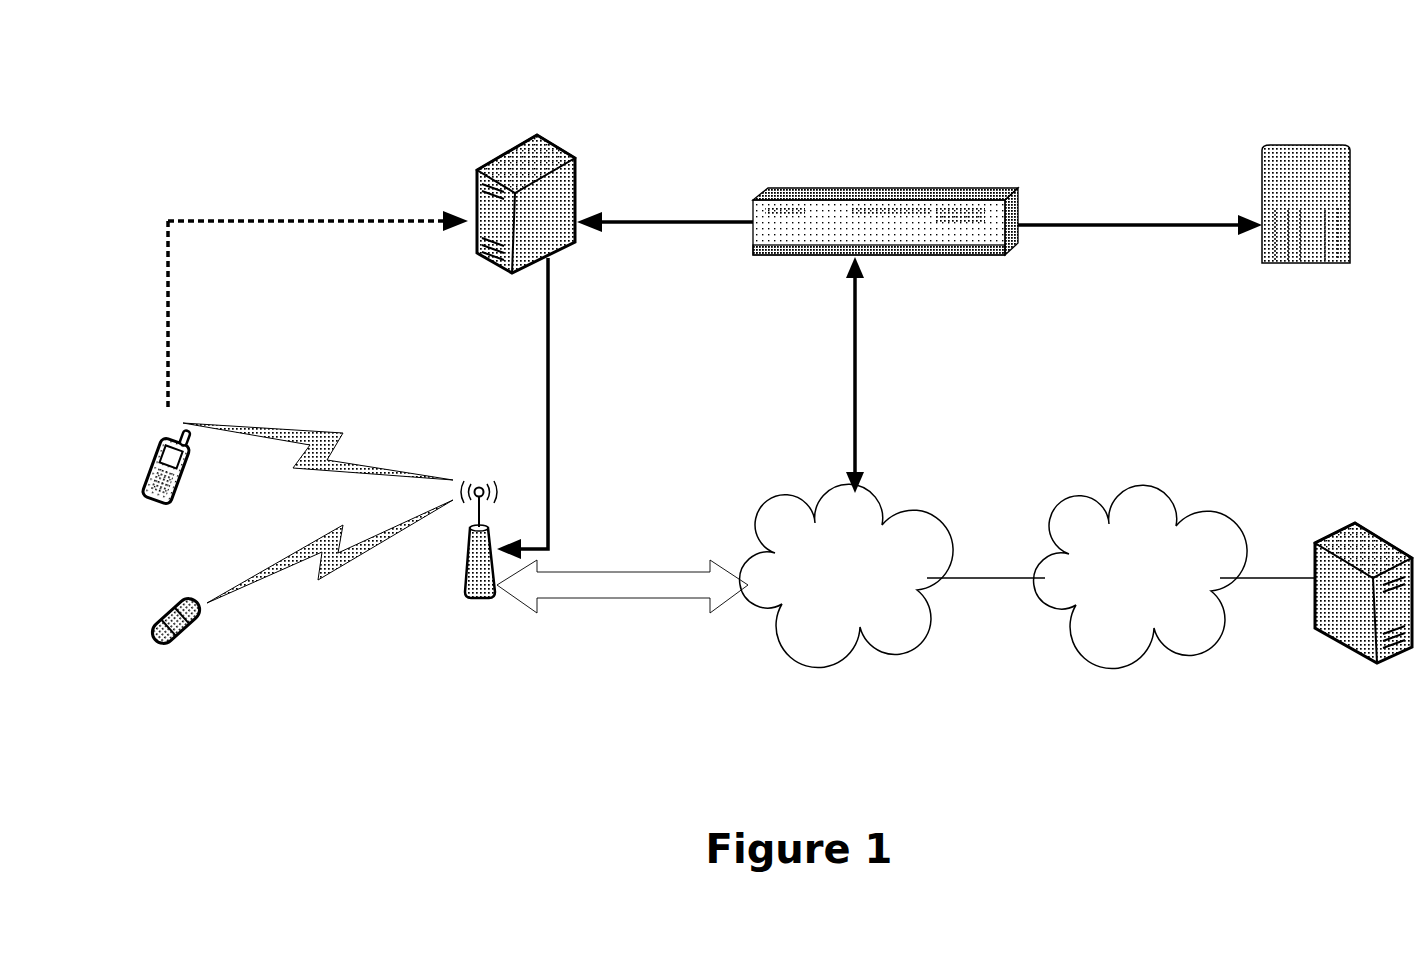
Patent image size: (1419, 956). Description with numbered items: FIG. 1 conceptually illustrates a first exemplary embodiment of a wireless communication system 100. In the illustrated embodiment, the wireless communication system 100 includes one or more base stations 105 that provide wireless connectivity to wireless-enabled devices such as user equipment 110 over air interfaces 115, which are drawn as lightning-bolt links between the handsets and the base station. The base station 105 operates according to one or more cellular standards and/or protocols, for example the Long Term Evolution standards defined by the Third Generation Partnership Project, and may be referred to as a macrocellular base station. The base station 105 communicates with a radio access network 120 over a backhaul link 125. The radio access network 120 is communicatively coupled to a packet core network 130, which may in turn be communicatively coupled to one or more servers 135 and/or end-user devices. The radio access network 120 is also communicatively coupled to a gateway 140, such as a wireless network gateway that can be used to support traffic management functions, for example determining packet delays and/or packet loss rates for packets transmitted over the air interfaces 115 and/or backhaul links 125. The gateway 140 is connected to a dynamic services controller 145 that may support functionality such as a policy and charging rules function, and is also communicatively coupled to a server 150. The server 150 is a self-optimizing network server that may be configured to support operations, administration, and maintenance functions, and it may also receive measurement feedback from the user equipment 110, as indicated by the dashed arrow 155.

The wireless communication system 100 is at (1222, 54).
The base station 105 is at (478, 600).
The user equipment 110 is at (170, 503).
The air interface 115 is at (323, 433).
The radio access network 120 is at (846, 575).
The backhaul link 125 is at (620, 600).
The packet core network 130 is at (1140, 576).
The server 135 is at (1352, 652).
The gateway 140 is at (922, 190).
The dynamic services controller 145 is at (1352, 207).
The server 150 is at (578, 165).
The dashed arrow 155 is at (233, 221).